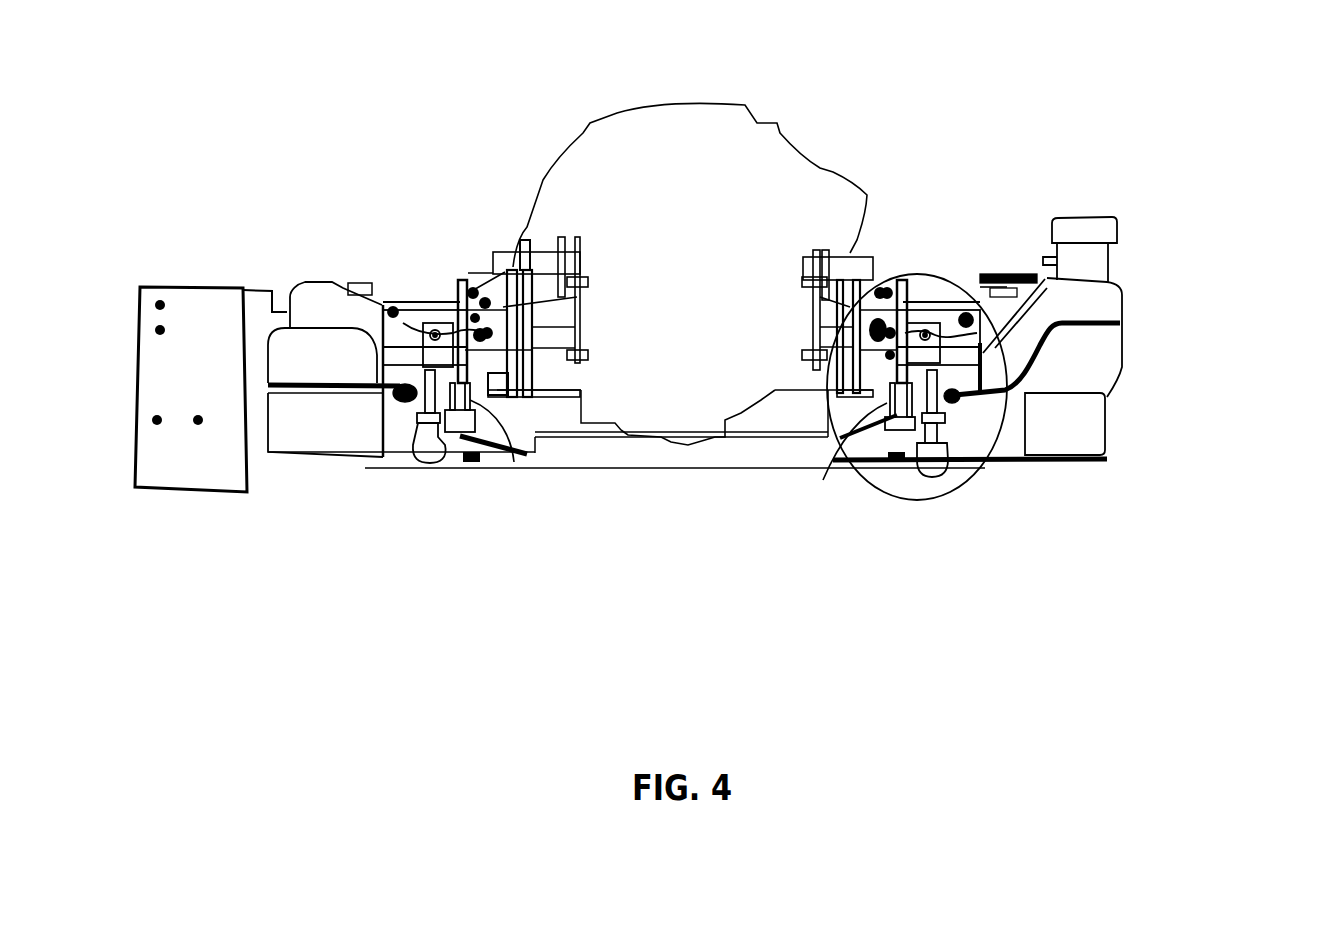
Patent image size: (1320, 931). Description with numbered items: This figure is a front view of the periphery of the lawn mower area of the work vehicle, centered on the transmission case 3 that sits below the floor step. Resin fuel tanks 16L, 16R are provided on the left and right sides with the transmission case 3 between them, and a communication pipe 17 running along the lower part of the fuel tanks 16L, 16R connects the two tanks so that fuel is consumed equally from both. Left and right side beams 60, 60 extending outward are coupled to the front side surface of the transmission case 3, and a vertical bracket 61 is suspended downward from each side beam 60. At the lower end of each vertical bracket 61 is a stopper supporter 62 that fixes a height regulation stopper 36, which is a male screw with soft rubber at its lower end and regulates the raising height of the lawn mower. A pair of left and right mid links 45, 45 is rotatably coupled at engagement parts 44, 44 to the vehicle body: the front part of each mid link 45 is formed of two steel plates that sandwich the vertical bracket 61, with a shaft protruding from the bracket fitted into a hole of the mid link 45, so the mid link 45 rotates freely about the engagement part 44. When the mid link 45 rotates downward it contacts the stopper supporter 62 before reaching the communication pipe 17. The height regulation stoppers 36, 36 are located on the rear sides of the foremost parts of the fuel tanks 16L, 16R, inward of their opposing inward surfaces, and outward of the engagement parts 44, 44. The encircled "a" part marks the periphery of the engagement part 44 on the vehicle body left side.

The transmission case 3 is at (688, 120).
The "a" part a is at (932, 263).
The side beam 60 is at (413, 320).
The vertical bracket 61 is at (437, 313).
The engagement part 44 is at (477, 403).
The mid link 45 is at (417, 405).
The stopper supporter 62 is at (442, 422).
The height regulation stopper 36 is at (427, 450).
The communication pipe 17 is at (685, 458).
The fuel tank 16L is at (1098, 350).
The fuel tank 16R is at (303, 445).